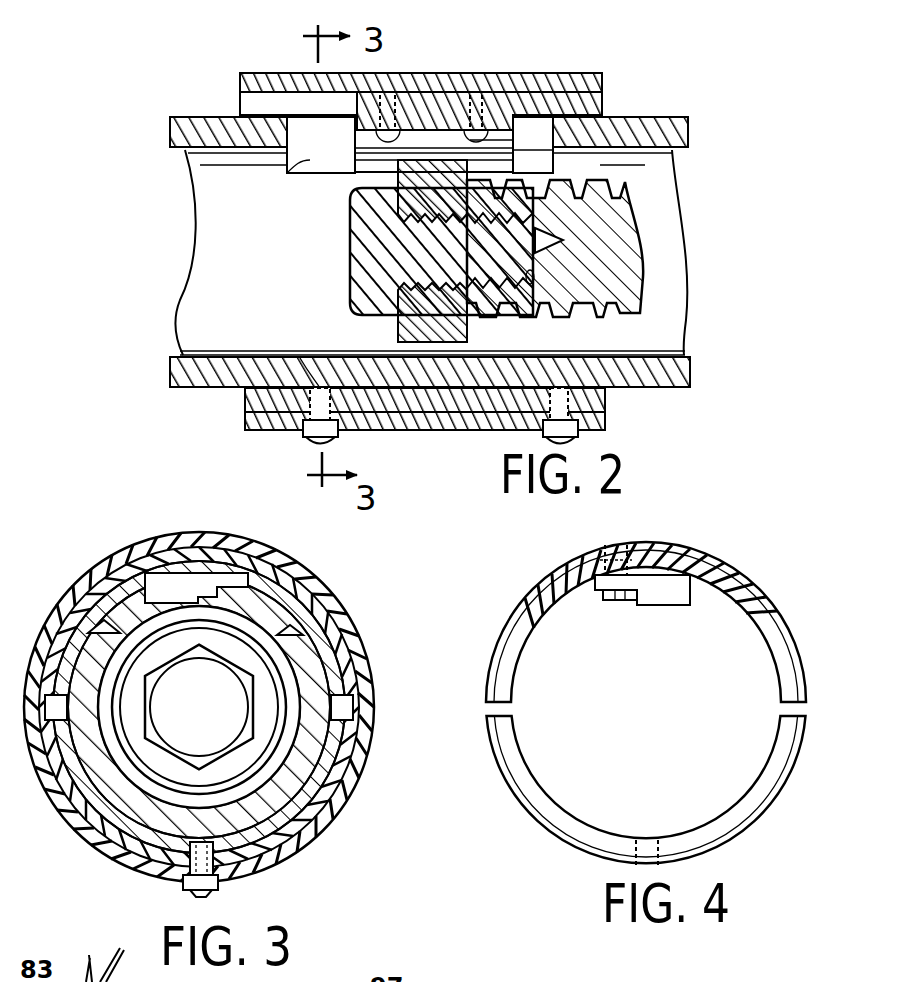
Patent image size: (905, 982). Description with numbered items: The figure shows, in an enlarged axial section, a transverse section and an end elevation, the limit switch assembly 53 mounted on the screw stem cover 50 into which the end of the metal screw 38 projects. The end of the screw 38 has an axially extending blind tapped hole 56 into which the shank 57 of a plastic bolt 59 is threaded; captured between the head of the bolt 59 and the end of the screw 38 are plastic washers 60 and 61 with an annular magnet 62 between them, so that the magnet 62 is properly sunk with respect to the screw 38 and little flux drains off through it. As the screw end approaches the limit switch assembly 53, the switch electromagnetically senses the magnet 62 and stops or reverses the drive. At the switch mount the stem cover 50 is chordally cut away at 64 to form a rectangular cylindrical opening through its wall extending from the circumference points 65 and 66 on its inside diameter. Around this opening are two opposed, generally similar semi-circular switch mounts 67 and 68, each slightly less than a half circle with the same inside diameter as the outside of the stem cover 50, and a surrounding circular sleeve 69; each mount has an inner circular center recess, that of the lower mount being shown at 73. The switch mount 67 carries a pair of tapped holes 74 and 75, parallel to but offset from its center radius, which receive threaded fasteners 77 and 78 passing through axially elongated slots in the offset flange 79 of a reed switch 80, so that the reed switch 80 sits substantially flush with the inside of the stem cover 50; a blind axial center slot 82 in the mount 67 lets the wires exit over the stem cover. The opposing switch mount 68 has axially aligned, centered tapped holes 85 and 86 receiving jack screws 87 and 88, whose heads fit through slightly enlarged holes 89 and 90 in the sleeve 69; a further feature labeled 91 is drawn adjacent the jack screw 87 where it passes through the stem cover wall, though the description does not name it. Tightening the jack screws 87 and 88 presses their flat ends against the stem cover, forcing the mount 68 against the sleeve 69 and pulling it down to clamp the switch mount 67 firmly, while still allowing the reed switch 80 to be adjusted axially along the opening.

In FIG. 2, the screw 38 is at (640, 250).
In FIG. 2, the screw stem cover 50 is at (682, 111).
In FIG. 3, the screw stem cover 50 is at (353, 667).
In FIG. 2, the limit switch assembly 53 is at (567, 66).
In FIG. 2, the blind tapped hole 56 is at (537, 293).
In FIG. 2, the shank 57 is at (503, 290).
In FIG. 2, the plastic bolt 59 is at (344, 262).
In FIG. 3, the plastic bolt 59 is at (225, 732).
In FIG. 2, the plastic washer 60 is at (398, 172).
In FIG. 3, the plastic washer 60 is at (270, 697).
In FIG. 2, the plastic washer 61 is at (491, 159).
In FIG. 2, the annular magnet 62 is at (434, 154).
In FIG. 2, the chordal cut-away 64 is at (287, 165).
In FIG. 3, the chordal cut-away 64 is at (287, 632).
In FIG. 3, the circumference point 65 is at (93, 572).
In FIG. 3, the circumference point 66 is at (283, 632).
In FIG. 2, the switch mount 67 is at (605, 96).
In FIG. 3, the switch mount 67 is at (233, 560).
In FIG. 4, the switch mount 67 is at (790, 616).
In FIG. 2, the switch mount 68 is at (607, 402).
In FIG. 3, the switch mount 68 is at (263, 842).
In FIG. 4, the switch mount 68 is at (764, 842).
In FIG. 2, the circular sleeve 69 is at (607, 425).
In FIG. 3, the circular sleeve 69 is at (325, 822).
In FIG. 2, the inner circular center recess 73 is at (404, 430).
In FIG. 2, the tapped hole 74 is at (380, 102).
In FIG. 4, the tapped hole 74 is at (622, 550).
In FIG. 2, the tapped hole 75 is at (480, 95).
In FIG. 2, the threaded fastener 77 is at (321, 145).
In FIG. 3, the threaded fastener 77 is at (188, 665).
In FIG. 2, the threaded fastener 78 is at (533, 145).
In FIG. 4, the threaded fastener 78 is at (615, 548).
In FIG. 4, the offset flange 79 is at (604, 592).
In FIG. 2, the reed switch 80 is at (533, 160).
In FIG. 3, the reed switch 80 is at (163, 592).
In FIG. 4, the reed switch 80 is at (665, 605).
In FIG. 2, the blind axial center slot 82 is at (242, 102).
In FIG. 3, the blind axial center slot 82 is at (200, 553).
In FIG. 2, the tapped hole 85 is at (318, 395).
In FIG. 3, the tapped hole 85 is at (192, 845).
In FIG. 4, the tapped hole 85 is at (642, 840).
In FIG. 2, the tapped hole 86 is at (565, 392).
In FIG. 2, the jack screw 87 is at (327, 438).
In FIG. 3, the jack screw 87 is at (205, 892).
In FIG. 2, the jack screw 88 is at (572, 444).
In FIG. 2, the enlarged hole 89 is at (305, 428).
In FIG. 3, the enlarged hole 89 is at (177, 878).
In FIG. 2, the enlarged hole 90 is at (520, 426).
In FIG. 3, the enlarged hole 90 is at (342, 707).
In FIG. 2, the bore 91 is at (303, 358).